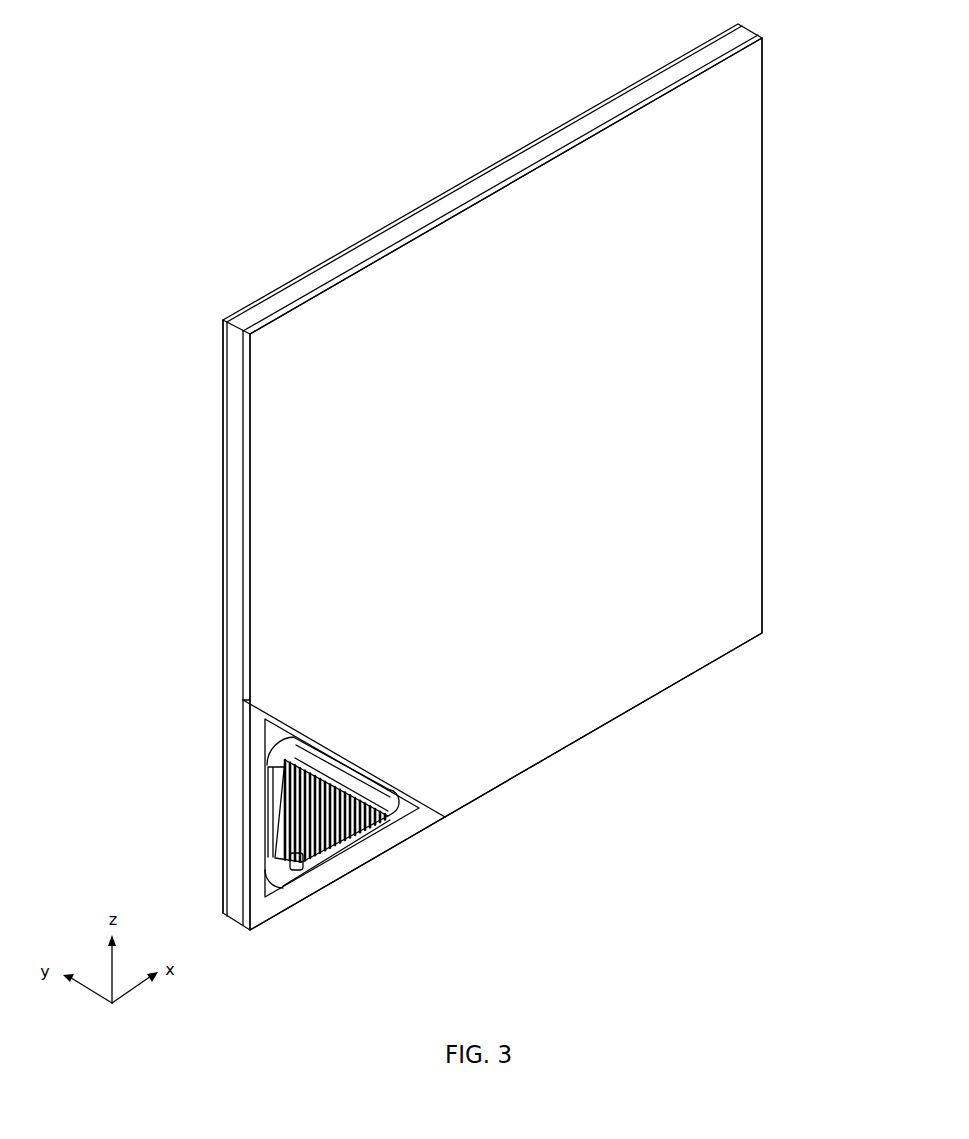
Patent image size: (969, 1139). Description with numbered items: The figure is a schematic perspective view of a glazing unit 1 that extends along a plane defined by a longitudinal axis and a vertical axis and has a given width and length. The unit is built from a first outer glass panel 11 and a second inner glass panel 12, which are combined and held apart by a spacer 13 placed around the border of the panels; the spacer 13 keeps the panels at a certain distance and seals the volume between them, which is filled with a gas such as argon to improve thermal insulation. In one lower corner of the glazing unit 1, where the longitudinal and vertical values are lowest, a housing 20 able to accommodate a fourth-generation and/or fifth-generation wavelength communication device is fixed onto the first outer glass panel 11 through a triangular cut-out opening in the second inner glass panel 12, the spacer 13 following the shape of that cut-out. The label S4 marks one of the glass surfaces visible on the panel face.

The glazing unit 1 is at (790, 105).
The first outer glass panel 11 is at (225, 368).
The second inner glass panel 12 is at (278, 320).
The spacer 13 is at (344, 268).
The front surface S4 is at (730, 430).
The housing 20 is at (200, 770).